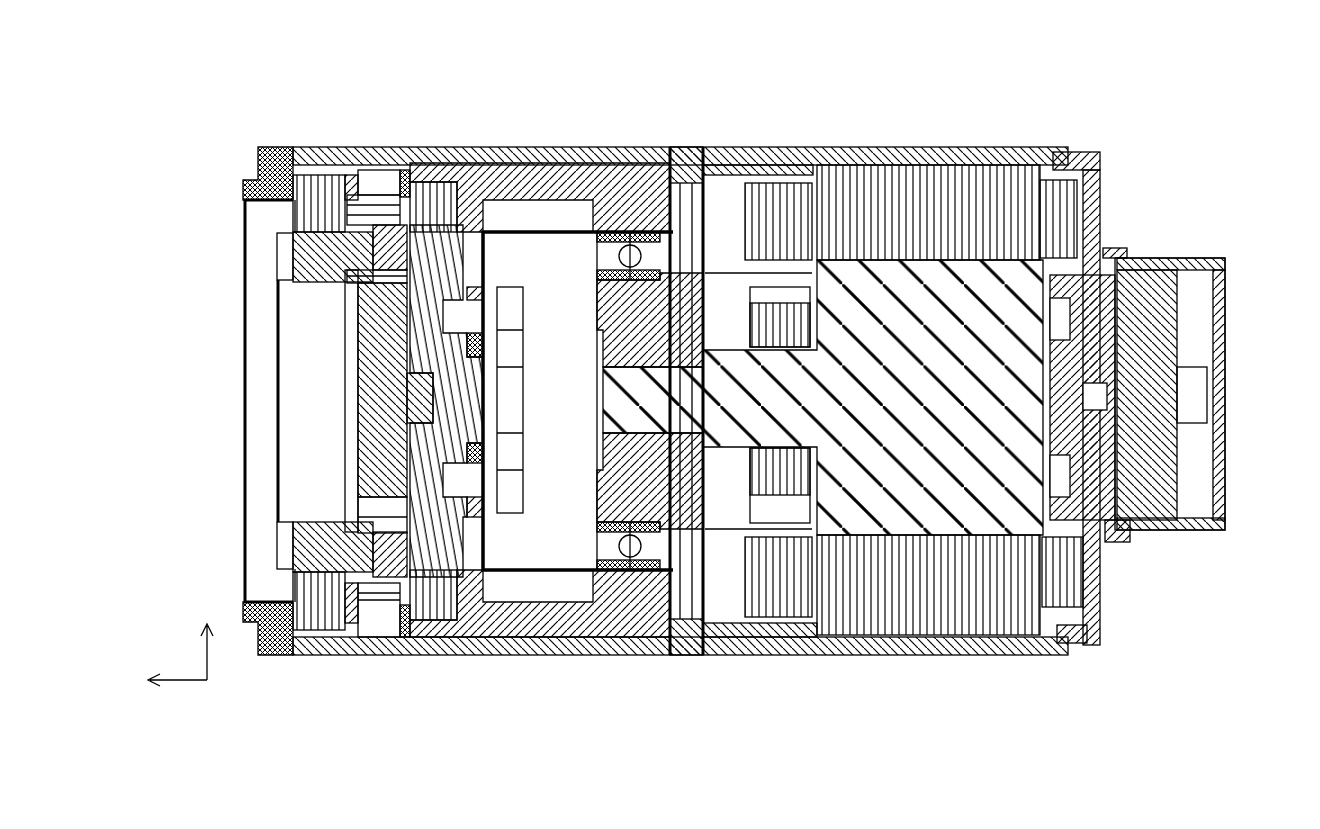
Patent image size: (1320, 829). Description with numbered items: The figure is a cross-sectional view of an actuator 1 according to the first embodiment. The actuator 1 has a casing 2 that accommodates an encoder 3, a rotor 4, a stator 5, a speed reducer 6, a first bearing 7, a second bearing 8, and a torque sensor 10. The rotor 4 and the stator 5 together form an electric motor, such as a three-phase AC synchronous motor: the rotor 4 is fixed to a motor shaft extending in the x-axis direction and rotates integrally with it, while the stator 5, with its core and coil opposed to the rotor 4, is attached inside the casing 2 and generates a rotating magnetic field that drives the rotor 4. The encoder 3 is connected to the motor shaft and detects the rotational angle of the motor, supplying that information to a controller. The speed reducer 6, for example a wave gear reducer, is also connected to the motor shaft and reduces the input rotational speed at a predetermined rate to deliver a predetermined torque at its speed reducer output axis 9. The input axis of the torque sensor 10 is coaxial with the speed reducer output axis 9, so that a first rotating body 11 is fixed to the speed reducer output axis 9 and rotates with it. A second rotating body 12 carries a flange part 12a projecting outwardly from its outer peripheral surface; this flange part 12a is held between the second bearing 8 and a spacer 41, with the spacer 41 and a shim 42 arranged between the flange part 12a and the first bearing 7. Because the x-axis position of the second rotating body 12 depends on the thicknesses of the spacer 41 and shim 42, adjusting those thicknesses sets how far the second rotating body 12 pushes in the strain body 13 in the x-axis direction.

The actuator 1 is at (1028, 86).
The casing 2 is at (580, 147).
The encoder 3 is at (1152, 520).
The rotor 4 is at (860, 515).
The stator 5 is at (987, 602).
The speed reducer 6 is at (570, 540).
The first bearing 7 is at (442, 632).
The second bearing 8 is at (320, 628).
The speed reducer output axis 9 is at (508, 430).
The torque sensor 10 is at (392, 179).
The first rotating body 11 is at (476, 655).
The second rotating body 12 is at (288, 335).
The flange part 12a is at (351, 625).
The strain body 13 is at (405, 625).
The spacer 41 is at (372, 625).
The shim 42 is at (412, 628).